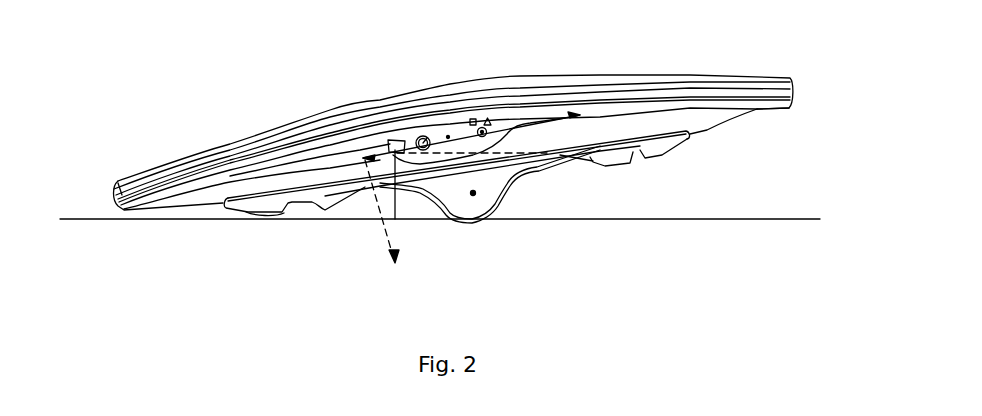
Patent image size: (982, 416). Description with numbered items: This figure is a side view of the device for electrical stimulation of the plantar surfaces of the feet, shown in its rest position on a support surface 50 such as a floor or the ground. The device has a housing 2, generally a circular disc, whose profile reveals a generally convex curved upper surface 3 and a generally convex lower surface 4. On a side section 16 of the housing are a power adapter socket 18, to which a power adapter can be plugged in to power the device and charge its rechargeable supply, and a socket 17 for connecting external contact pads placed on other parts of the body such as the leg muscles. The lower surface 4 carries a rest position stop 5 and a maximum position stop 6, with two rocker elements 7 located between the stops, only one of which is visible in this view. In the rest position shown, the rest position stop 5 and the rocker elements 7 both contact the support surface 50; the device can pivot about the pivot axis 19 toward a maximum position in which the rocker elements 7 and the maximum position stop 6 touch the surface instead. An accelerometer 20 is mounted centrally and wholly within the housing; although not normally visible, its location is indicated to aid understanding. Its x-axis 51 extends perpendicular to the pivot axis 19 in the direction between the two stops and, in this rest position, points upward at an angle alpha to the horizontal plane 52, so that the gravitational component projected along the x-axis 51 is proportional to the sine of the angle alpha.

The housing 2 is at (117, 194).
The upper surface 3 is at (463, 77).
The lower surface 4 is at (735, 122).
The rest position stop 5 is at (267, 220).
The maximum position stop 6 is at (663, 152).
The rocker element 7 is at (482, 208).
The side section 16 is at (447, 210).
The socket 17 is at (482, 127).
The power adapter socket 18 is at (423, 136).
The pivot axis 19 is at (473, 193).
The accelerometer 20 is at (397, 140).
The support surface 50 is at (802, 219).
The x-axis 51 is at (562, 115).
The horizontal plane 52 is at (567, 153).
The angle alpha is at (543, 153).